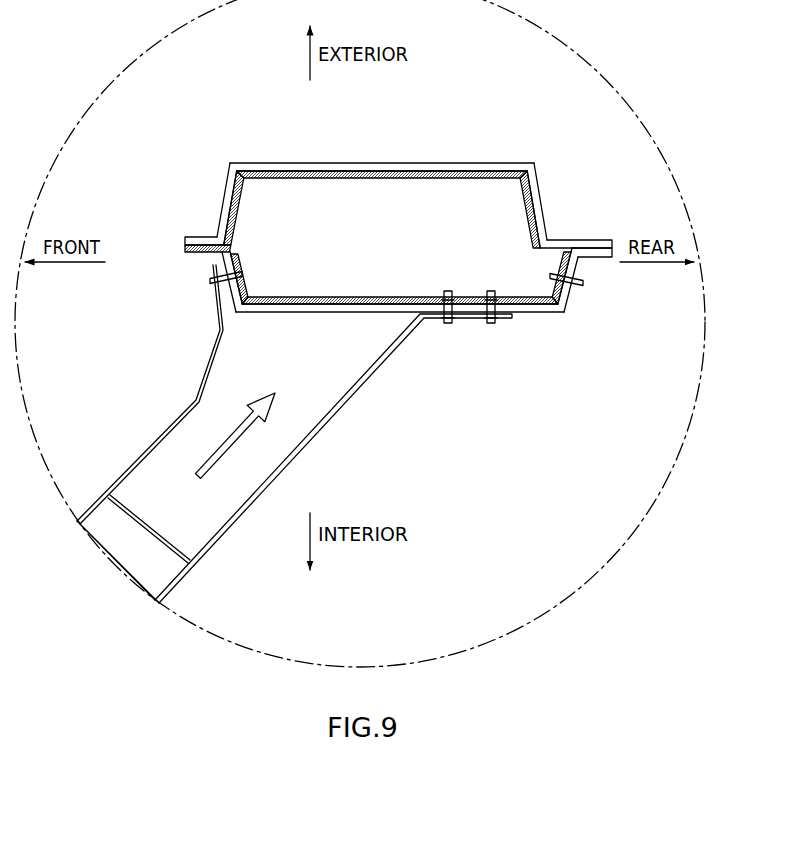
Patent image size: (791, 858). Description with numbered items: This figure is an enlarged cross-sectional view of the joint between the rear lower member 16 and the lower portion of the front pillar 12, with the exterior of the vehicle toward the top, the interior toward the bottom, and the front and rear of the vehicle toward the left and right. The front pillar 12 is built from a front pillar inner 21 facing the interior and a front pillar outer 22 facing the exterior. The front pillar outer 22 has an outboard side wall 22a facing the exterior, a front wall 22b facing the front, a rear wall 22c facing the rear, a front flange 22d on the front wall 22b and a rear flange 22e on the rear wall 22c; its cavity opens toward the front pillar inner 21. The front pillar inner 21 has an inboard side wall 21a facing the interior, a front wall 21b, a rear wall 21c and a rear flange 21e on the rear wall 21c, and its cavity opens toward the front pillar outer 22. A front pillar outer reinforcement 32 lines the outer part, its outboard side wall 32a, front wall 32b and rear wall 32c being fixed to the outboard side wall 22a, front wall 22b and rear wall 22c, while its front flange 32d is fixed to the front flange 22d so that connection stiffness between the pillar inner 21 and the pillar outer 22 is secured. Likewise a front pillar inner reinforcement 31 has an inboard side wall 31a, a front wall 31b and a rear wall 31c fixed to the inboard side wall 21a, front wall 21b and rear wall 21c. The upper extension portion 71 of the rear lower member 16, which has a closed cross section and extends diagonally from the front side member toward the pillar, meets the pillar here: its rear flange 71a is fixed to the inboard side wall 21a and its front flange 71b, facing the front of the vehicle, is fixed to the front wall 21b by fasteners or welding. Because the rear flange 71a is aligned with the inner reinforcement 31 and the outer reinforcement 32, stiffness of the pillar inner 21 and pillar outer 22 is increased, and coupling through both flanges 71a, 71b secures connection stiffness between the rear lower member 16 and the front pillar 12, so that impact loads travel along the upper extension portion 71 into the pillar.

The front pillar 12 is at (566, 213).
The rear lower member 16 is at (166, 407).
The front pillar inner 21 is at (524, 321).
The inboard side wall 21a is at (545, 314).
The front wall 21b is at (222, 262).
The rear wall 21c is at (572, 298).
The rear flange 21e is at (593, 260).
The front pillar outer 22 is at (427, 150).
The outboard side wall 22a is at (318, 163).
The front wall 22b is at (228, 193).
The rear wall 22c is at (538, 180).
The front flange 22d is at (196, 237).
The rear flange 22e is at (594, 240).
The front pillar inner reinforcement 31 is at (341, 288).
The inboard side wall 31a is at (372, 294).
The front wall 31b is at (552, 289).
The rear wall 31c is at (240, 268).
The front pillar outer reinforcement 32 is at (328, 219).
The outboard side wall 32a is at (402, 183).
The front wall 32b is at (241, 198).
The rear wall 32c is at (522, 201).
The front flange 32d is at (186, 255).
The upper extension portion 71 is at (314, 435).
The rear flange 71a is at (468, 318).
The front flange 71b is at (214, 293).